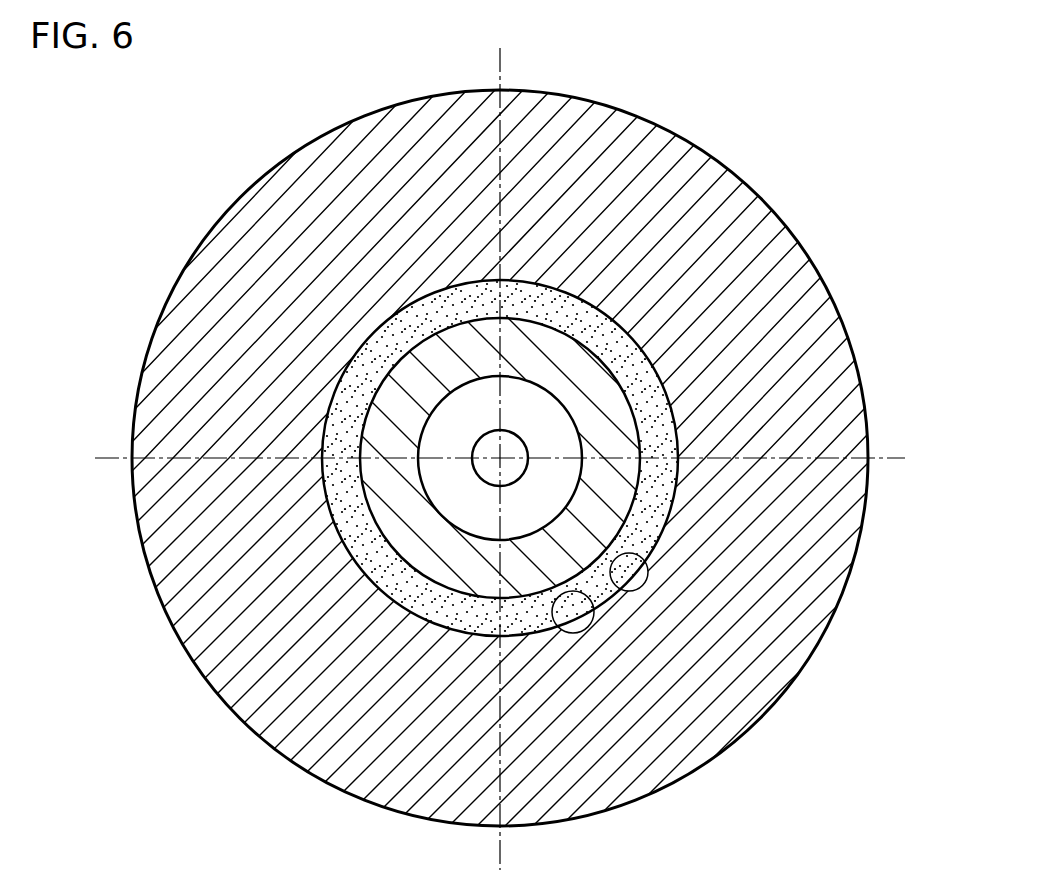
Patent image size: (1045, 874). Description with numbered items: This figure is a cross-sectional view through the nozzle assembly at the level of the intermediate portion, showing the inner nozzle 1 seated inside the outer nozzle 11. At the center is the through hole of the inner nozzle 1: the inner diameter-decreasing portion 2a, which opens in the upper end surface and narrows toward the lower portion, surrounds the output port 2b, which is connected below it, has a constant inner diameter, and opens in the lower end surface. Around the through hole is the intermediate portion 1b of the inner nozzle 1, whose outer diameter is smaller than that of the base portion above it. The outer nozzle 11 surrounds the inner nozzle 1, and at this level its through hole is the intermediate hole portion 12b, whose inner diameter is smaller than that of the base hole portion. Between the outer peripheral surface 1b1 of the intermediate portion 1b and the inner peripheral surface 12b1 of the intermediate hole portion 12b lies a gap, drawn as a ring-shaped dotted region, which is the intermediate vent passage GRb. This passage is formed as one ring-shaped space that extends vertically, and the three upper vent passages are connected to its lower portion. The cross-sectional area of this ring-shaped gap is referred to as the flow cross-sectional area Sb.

The inner nozzle 1 is at (490, 458).
The intermediate portion 1b is at (335, 400).
The outer peripheral surface 1b1 is at (392, 373).
The inner diameter-decreasing portion 2a is at (448, 397).
The output port 2b is at (509, 480).
The outer nozzle 11 is at (629, 516).
The intermediate hole portion 12b is at (640, 563).
The inner peripheral surface 12b1 is at (600, 610).
The intermediate vent passage GRb is at (652, 515).